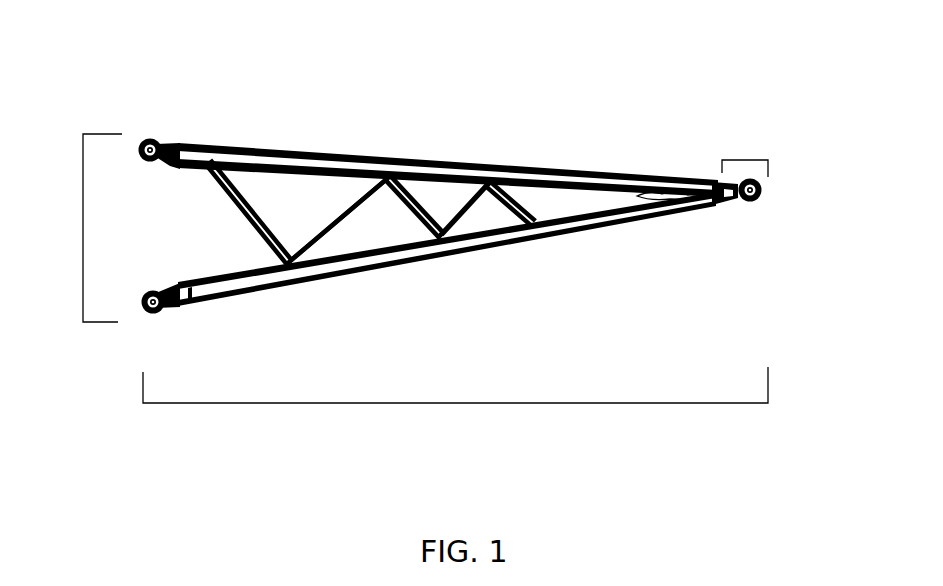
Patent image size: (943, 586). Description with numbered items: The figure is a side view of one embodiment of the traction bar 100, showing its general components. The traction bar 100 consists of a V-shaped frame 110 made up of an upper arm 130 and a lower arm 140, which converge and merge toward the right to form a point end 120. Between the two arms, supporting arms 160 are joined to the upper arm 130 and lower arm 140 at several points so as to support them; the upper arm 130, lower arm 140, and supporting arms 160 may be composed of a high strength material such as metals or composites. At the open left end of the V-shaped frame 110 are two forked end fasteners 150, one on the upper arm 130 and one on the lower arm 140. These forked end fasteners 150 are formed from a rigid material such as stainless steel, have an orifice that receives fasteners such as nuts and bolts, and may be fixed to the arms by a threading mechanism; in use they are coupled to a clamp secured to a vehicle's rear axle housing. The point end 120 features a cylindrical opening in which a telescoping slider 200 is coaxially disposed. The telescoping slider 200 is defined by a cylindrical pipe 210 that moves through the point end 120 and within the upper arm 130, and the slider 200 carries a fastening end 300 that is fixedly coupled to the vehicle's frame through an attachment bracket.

The traction bar 100 is at (467, 403).
The V-shaped frame 110 is at (83, 217).
The point end 120 is at (713, 197).
The upper arm 130 is at (468, 172).
The lower arm 140 is at (468, 242).
The forked end fasteners 150 is at (148, 163).
The supporting arms 160 is at (467, 202).
The telescoping slider 200 is at (748, 158).
The cylindrical pipe 210 is at (730, 197).
The fastening end 300 is at (758, 202).